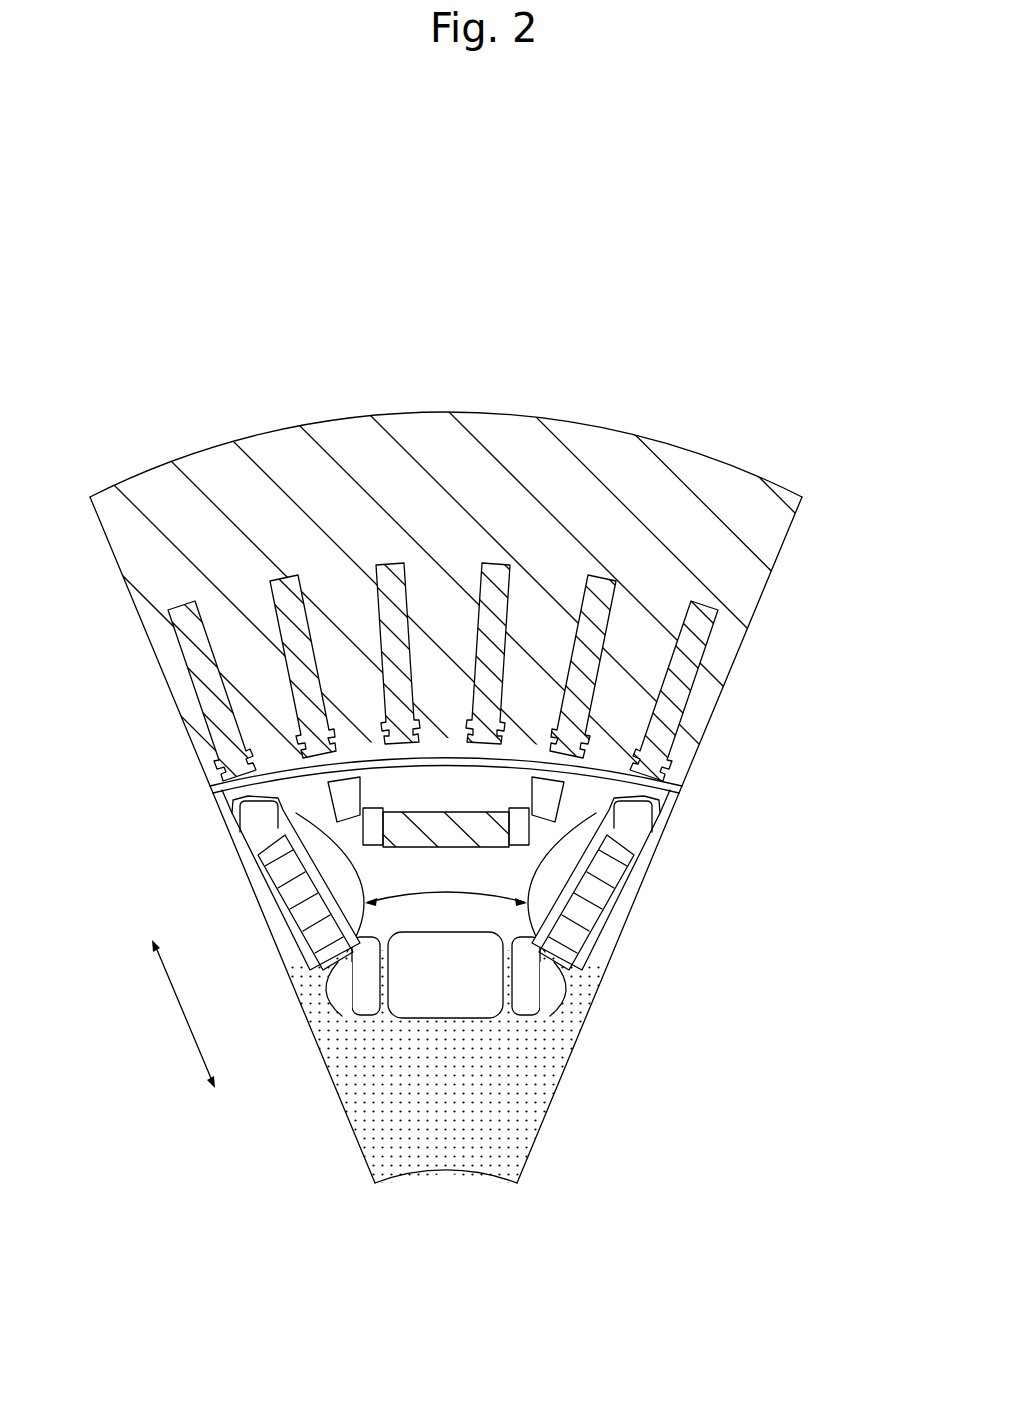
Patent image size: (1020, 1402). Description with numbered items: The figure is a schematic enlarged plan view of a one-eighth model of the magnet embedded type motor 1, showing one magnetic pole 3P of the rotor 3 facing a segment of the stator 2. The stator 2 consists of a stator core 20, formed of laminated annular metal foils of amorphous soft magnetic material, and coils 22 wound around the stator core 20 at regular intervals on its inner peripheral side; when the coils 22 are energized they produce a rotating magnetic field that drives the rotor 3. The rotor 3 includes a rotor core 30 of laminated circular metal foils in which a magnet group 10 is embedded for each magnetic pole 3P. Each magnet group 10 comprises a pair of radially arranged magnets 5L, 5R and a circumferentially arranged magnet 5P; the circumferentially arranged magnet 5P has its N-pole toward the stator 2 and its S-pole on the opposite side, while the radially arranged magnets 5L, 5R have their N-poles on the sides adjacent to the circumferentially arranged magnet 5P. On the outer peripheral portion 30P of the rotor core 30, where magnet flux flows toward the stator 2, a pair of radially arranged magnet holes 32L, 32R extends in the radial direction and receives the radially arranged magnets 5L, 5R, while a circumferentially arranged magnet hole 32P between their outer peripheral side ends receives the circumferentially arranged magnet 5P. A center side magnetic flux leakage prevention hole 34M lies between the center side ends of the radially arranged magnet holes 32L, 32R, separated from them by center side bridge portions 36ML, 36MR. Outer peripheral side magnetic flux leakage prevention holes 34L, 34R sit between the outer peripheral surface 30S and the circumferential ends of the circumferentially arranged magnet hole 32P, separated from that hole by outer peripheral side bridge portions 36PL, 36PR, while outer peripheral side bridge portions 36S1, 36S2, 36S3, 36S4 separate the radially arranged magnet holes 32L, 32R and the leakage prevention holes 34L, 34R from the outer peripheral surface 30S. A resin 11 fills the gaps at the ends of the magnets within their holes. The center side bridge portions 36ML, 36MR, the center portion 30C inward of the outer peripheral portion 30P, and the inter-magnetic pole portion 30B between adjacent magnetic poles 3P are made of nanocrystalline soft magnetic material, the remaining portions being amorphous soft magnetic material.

The magnet embedded type motor 1 is at (670, 250).
The stator 2 is at (247, 430).
The rotor 3 is at (447, 1182).
The magnet group 10 is at (555, 300).
The radially arranged magnet 5L is at (373, 833).
The circumferentially arranged magnet 5P is at (470, 822).
The radially arranged magnet 5R is at (521, 833).
The magnetic pole 3P is at (443, 746).
The stator core 20 is at (130, 546).
The coil 22 is at (707, 628).
The outer peripheral side bridge portion 36S1 is at (212, 782).
The outer peripheral side bridge portion 36S2 is at (310, 758).
The outer peripheral side bridge portion 36S3 is at (583, 752).
The outer peripheral side bridge portion 36S4 is at (677, 786).
The rotor core 30 is at (372, 1148).
The outer peripheral surface 30S is at (693, 780).
The inter-magnetic pole portion 30B is at (268, 928).
The outer peripheral portion 30P is at (580, 865).
The center portion 30C is at (557, 1088).
The circumferentially arranged magnet hole 32P is at (462, 848).
The radially arranged magnet hole 32L is at (318, 950).
The radially arranged magnet hole 32R is at (574, 950).
The outer peripheral side magnetic flux leakage prevention hole 34L is at (341, 786).
The outer peripheral side magnetic flux leakage prevention hole 34R is at (551, 786).
The center side magnetic flux leakage prevention hole 34M is at (448, 992).
The outer peripheral side bridge portion 36PL is at (262, 845).
The outer peripheral side bridge portion 36PR is at (632, 845).
The center side bridge portion 36ML is at (343, 1015).
The center side bridge portion 36MR is at (535, 1081).
The resin 11 is at (372, 823).